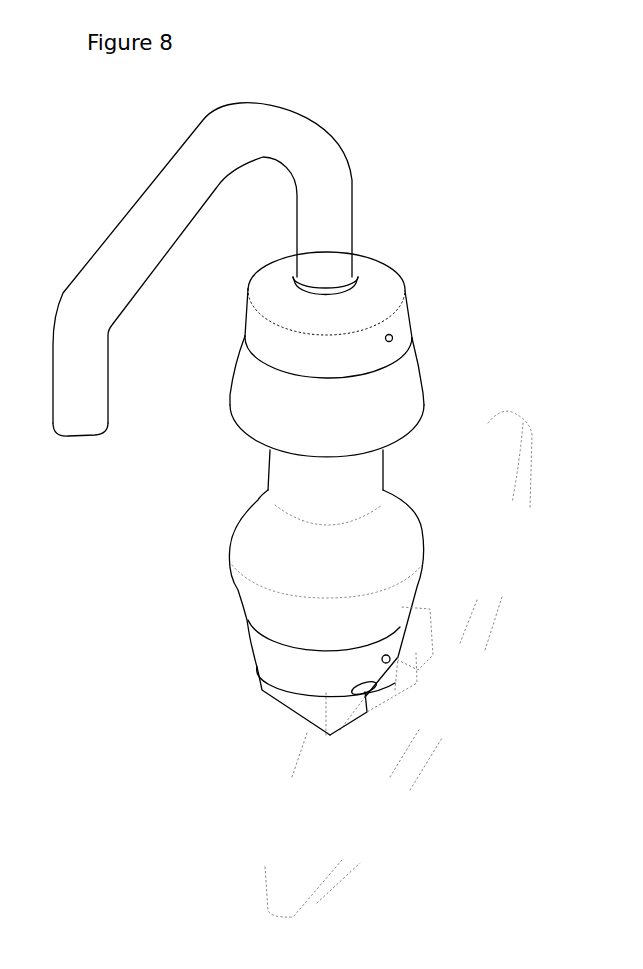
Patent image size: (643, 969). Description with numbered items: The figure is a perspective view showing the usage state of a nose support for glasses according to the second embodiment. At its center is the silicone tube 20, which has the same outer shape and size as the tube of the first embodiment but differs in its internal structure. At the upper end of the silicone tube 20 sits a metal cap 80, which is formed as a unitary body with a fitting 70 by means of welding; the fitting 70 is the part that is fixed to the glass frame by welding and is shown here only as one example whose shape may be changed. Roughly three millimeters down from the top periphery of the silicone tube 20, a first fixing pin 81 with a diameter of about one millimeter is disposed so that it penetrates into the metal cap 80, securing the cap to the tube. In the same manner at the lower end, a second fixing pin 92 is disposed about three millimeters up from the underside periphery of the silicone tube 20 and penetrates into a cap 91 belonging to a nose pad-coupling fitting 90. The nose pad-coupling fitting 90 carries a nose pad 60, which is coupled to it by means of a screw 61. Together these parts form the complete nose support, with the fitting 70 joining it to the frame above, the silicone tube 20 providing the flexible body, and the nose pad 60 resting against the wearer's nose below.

The silicone tube 20 is at (188, 526).
The nose pad 60 is at (505, 607).
The screw 61 is at (367, 712).
The fitting 70 is at (100, 394).
The metal cap 80 is at (383, 281).
The first fixing pin 81 is at (393, 338).
The nose pad-coupling fitting 90 is at (286, 708).
The cap 91 is at (258, 652).
The second fixing pin 92 is at (390, 661).